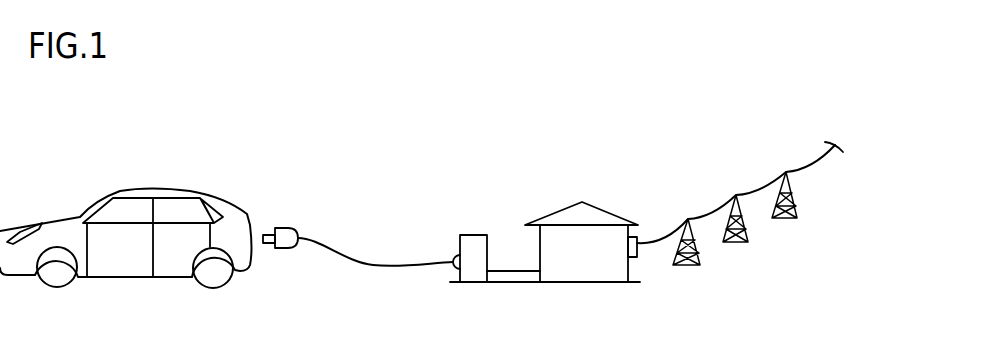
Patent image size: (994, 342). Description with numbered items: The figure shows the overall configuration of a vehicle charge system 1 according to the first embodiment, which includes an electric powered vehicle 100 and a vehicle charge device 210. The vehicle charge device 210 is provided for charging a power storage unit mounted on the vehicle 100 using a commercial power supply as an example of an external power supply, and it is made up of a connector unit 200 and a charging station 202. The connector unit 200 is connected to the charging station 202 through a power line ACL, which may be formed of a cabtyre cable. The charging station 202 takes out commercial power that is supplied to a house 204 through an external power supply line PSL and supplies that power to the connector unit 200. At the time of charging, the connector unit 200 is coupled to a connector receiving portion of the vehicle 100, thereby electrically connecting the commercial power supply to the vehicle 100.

The vehicle charge system 1 is at (748, 79).
The electric powered vehicle 100 is at (155, 188).
The connector unit 200 is at (285, 244).
The vehicle charge device 210 is at (417, 180).
The power line ACL is at (335, 250).
The charging station 202 is at (473, 243).
The house 204 is at (600, 215).
The external power supply line PSL is at (712, 212).